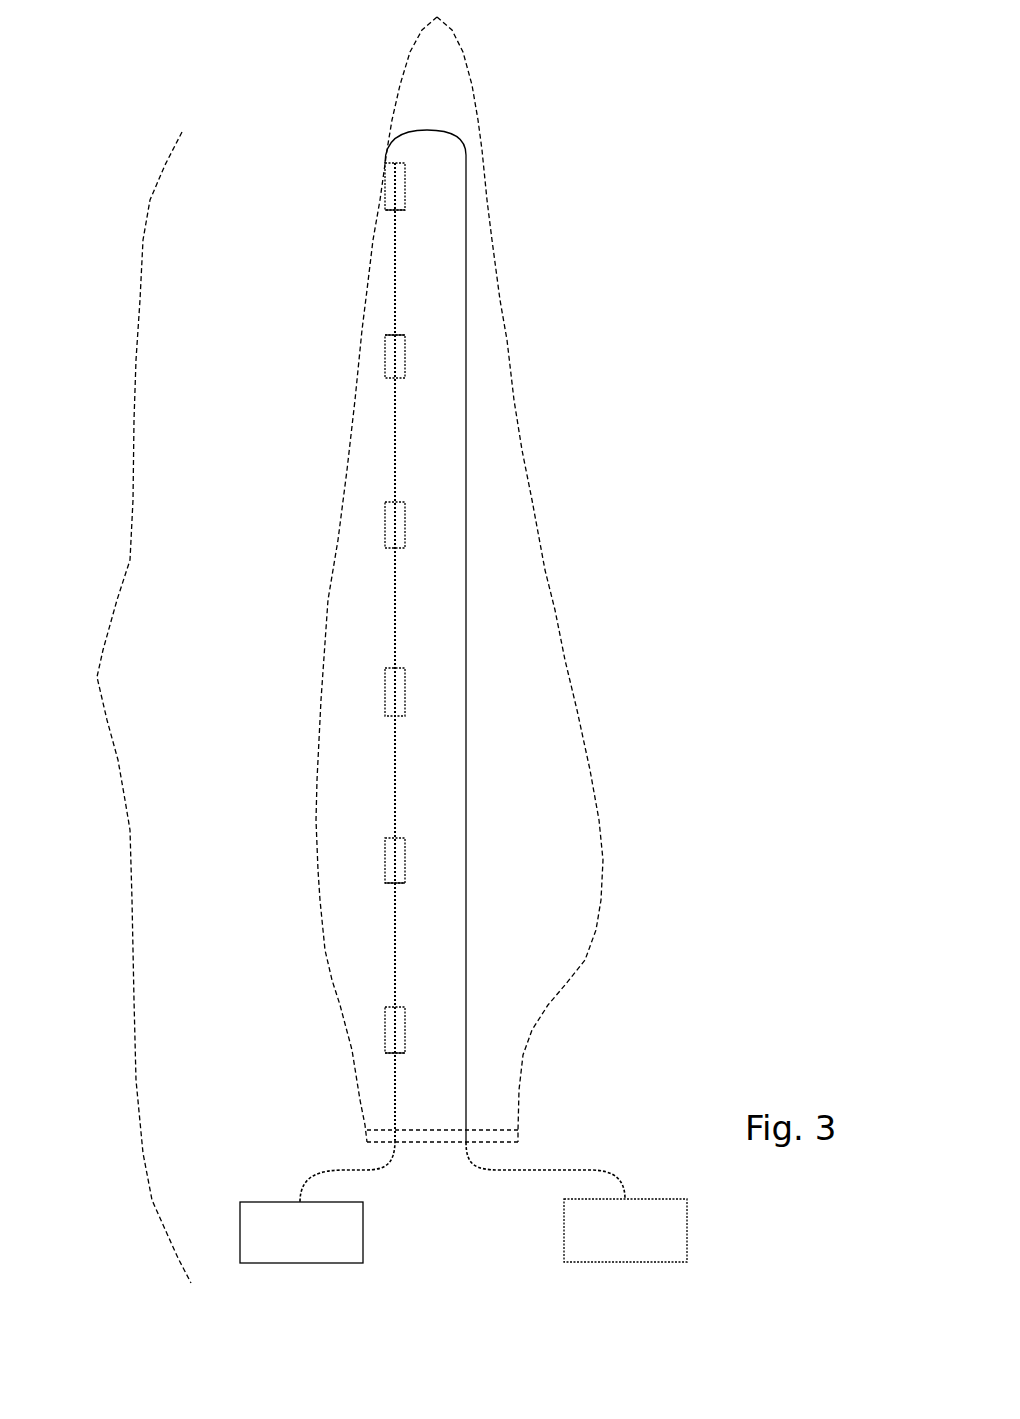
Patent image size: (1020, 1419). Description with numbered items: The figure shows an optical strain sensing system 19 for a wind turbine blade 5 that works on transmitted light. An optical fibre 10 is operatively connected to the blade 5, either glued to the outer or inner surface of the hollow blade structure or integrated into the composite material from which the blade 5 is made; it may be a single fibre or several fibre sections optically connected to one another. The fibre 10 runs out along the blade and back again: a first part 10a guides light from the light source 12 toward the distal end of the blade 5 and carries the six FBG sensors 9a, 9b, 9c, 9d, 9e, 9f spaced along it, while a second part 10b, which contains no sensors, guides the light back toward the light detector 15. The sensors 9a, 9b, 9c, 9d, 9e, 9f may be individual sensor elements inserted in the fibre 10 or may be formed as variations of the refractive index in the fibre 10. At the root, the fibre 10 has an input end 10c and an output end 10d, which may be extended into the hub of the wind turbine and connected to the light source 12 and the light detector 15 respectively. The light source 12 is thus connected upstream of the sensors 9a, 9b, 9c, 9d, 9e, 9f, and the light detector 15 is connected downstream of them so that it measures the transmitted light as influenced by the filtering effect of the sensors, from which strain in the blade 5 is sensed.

The wind turbine blade 5 is at (578, 560).
The optical strain sensing system 19 is at (120, 707).
The optical fibre 10 is at (395, 292).
The first part of the optical fibre 10a is at (391, 420).
The second part of the optical fibre 10b is at (466, 365).
The input end of the fibre 10c is at (342, 1168).
The output end of the fibre 10d is at (590, 1170).
The FBG sensor 9a is at (388, 1040).
The FBG sensor 9b is at (388, 860).
The FBG sensor 9c is at (388, 690).
The FBG sensor 9d is at (388, 523).
The FBG sensor 9e is at (387, 358).
The FBG sensor 9f is at (386, 190).
The light source 12 is at (253, 1243).
The light detector 15 is at (683, 1233).